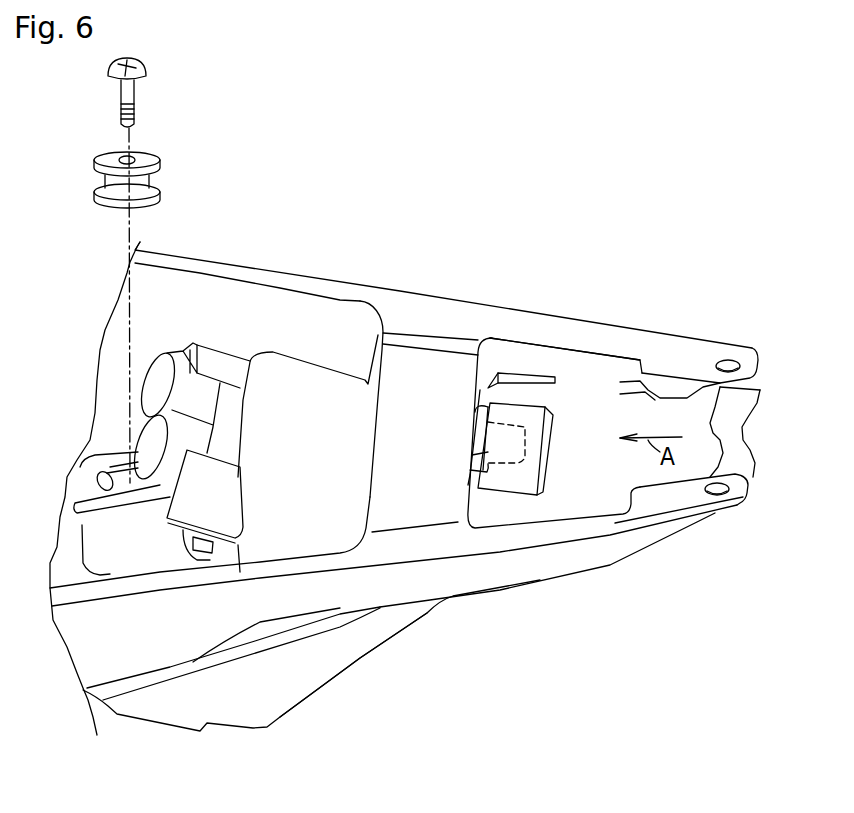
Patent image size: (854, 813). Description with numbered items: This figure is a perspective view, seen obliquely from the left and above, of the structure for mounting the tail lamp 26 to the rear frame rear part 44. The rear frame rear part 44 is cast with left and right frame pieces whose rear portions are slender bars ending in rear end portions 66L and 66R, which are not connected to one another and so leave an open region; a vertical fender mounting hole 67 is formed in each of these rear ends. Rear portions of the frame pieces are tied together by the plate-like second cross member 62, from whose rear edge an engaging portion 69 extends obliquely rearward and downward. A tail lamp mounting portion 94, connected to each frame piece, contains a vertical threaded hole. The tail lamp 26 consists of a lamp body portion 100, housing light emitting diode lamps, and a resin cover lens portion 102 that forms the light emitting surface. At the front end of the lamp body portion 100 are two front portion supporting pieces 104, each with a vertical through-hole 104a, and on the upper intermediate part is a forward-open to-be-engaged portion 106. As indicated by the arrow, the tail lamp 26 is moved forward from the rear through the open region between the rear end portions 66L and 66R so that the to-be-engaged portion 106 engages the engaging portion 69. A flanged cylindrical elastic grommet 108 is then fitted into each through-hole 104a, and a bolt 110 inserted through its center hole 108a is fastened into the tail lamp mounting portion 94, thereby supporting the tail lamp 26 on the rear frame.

The rear frame rear part 44 is at (344, 277).
The tail lamp 26 is at (583, 412).
The second cross member 62 is at (430, 370).
The right rear end portion 66R is at (692, 358).
The left rear end portion 66L is at (692, 500).
The fender mounting hole 67 is at (724, 362).
The engaging portion 69 is at (478, 490).
The tail lamp mounting portion 94 is at (132, 557).
The lamp body portion 100 is at (272, 375).
The cover lens portion 102 is at (330, 670).
The front portion supporting piece 104 is at (87, 482).
The through-hole 104a is at (107, 473).
The to-be-engaged portion 106 is at (486, 390).
The elastic grommet 108 is at (152, 162).
The center hole 108a is at (136, 158).
The bolt 110 is at (147, 70).